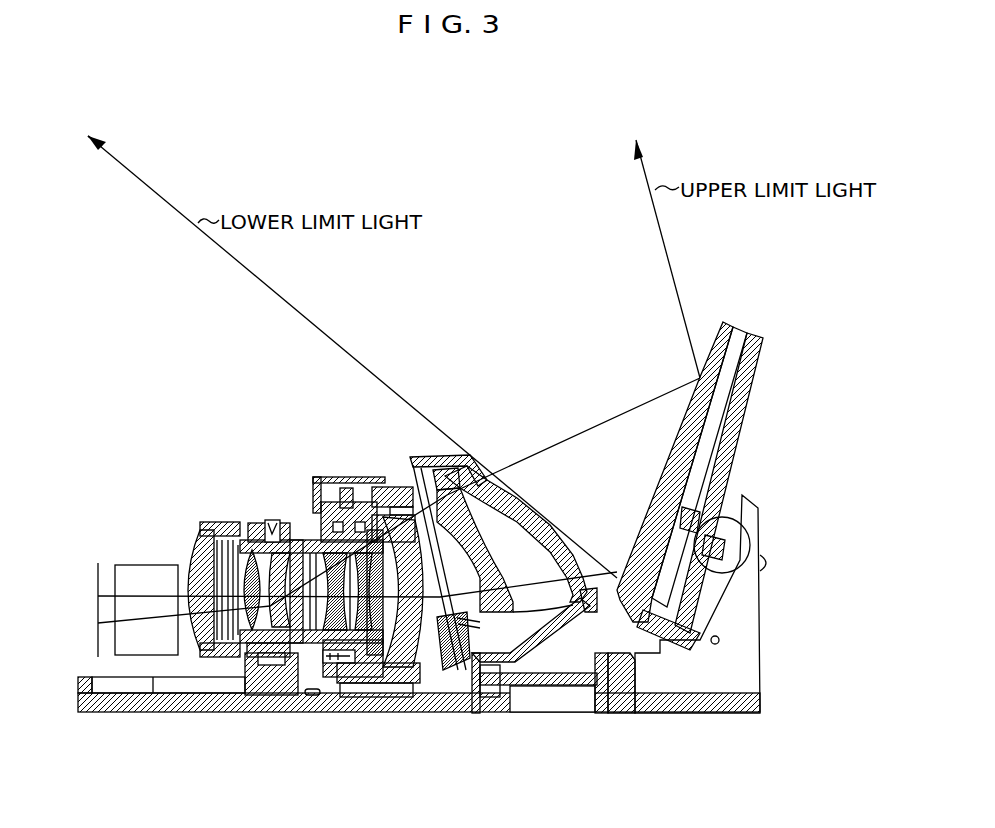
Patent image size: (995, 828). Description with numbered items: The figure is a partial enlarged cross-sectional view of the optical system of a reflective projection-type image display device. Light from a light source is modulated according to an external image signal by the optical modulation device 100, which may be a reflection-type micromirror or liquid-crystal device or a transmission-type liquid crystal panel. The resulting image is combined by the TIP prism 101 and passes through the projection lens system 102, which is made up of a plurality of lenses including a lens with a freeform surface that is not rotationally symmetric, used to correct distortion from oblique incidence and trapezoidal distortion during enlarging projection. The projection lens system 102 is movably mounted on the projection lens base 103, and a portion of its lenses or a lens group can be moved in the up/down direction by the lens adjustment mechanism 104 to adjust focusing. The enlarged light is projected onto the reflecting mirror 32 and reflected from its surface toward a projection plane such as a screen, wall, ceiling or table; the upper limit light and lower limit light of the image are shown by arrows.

The optical modulation device 100 is at (98, 579).
The TIP prism 101 is at (147, 565).
The projection lens system 102 is at (445, 448).
The projection lens base 103 is at (330, 712).
The lens adjustment mechanism 104 is at (258, 524).
The reflecting mirror 32 is at (660, 490).